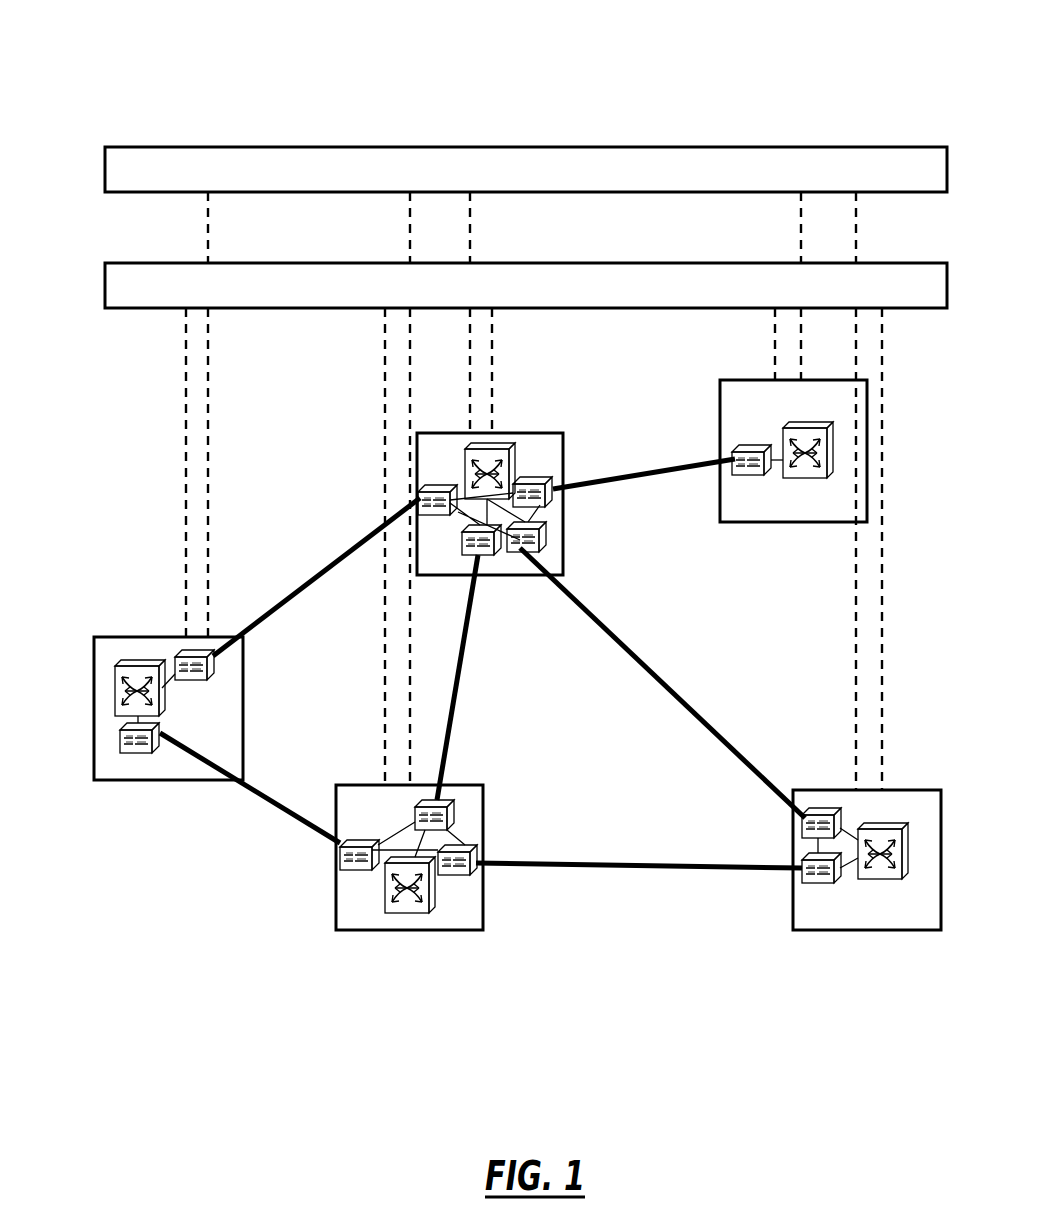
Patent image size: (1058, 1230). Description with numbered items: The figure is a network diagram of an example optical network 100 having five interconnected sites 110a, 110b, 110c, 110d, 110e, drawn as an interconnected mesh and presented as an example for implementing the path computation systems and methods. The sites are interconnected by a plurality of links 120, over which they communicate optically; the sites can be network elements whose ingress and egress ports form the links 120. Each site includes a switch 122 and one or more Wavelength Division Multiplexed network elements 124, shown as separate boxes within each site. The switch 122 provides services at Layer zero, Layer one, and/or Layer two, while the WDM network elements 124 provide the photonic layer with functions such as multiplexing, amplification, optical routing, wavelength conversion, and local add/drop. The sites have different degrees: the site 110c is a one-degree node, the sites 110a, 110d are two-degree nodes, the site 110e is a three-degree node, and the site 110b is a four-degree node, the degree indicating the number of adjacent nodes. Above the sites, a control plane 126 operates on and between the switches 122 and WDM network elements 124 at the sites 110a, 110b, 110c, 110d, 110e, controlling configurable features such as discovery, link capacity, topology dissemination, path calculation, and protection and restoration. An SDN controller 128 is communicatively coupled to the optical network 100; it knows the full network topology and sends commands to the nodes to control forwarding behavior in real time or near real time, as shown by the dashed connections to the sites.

The optical network 100 is at (607, 68).
The site 110a is at (94, 747).
The site 110b is at (532, 433).
The site 110c is at (805, 462).
The site 110d is at (840, 930).
The site 110e is at (335, 910).
The link 120 is at (310, 587).
The switch 122 is at (810, 420).
The WDM network element 124 is at (755, 445).
The control plane 126 is at (685, 263).
The SDN controller 128 is at (685, 147).